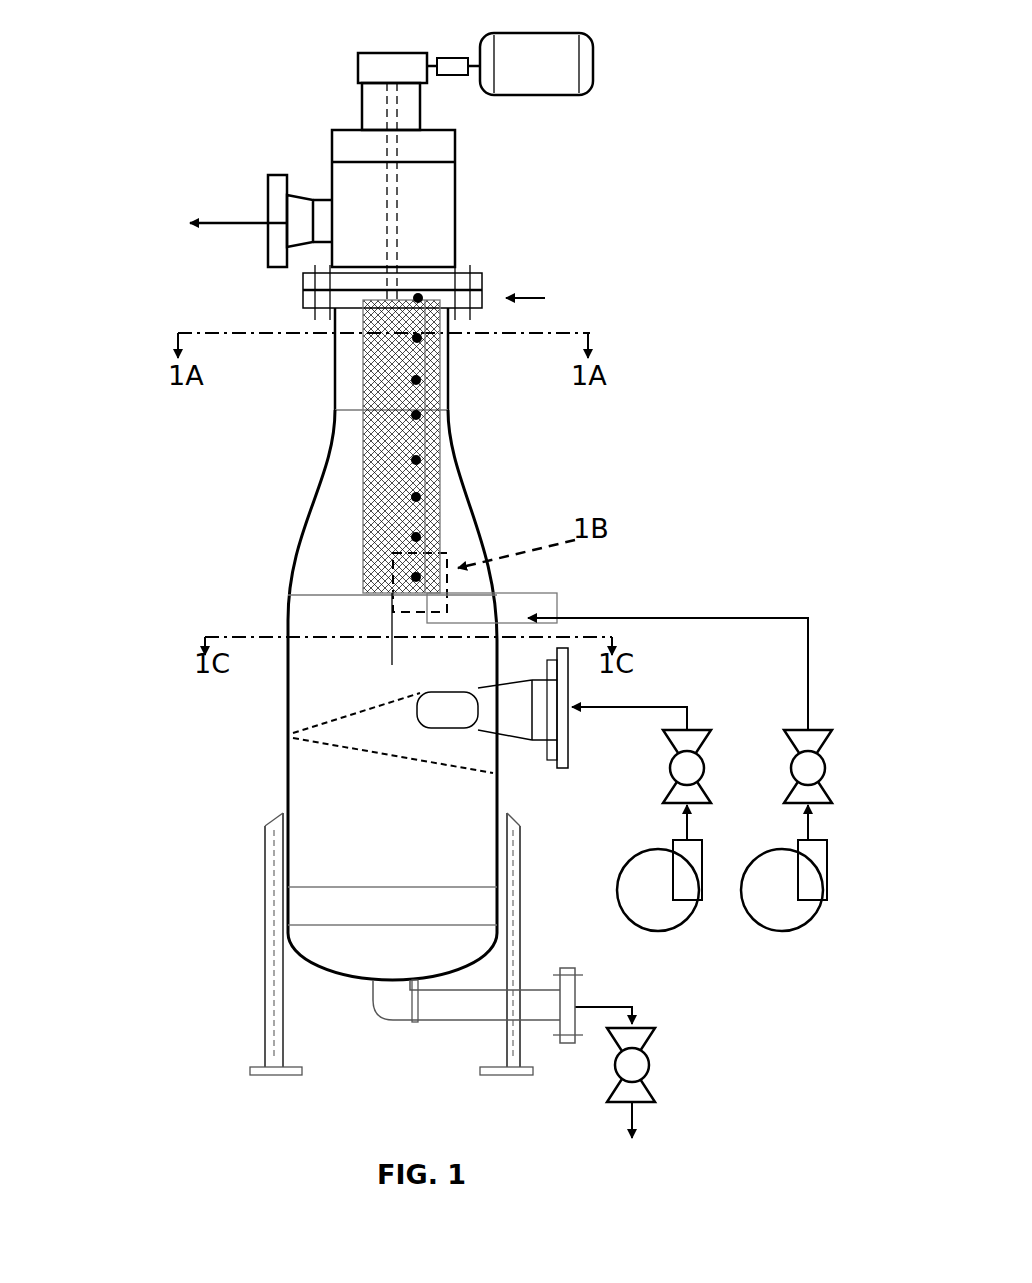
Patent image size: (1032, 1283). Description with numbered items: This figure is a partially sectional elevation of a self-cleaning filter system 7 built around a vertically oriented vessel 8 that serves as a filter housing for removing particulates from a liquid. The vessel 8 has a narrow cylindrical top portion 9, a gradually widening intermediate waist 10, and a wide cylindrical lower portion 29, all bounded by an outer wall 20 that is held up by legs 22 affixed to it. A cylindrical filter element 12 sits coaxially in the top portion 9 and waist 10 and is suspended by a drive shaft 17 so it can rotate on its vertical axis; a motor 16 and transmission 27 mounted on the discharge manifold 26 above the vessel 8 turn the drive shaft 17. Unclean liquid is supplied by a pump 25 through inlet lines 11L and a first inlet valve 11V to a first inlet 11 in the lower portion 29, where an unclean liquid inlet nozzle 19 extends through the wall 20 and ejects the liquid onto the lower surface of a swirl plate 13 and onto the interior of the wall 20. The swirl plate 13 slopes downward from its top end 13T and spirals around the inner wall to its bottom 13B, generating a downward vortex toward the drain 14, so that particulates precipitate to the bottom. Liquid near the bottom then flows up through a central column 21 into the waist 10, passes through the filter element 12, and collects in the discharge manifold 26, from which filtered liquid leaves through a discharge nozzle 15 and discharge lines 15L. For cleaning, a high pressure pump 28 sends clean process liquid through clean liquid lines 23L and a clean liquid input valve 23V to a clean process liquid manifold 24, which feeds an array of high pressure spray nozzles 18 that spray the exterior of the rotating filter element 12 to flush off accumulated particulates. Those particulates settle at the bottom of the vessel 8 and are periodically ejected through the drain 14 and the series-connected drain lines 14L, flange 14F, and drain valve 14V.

The filter system 7 is at (148, 951).
The vessel 8 is at (203, 592).
The cylindrical top portion 9 is at (310, 350).
The intermediate waist 10 is at (303, 460).
The first inlet 11 is at (568, 690).
The inlet lines 11L is at (670, 705).
The first inlet valve 11V is at (670, 768).
The filter element 12 is at (363, 384).
The swirl plate 13 is at (305, 705).
The top end of swirl plate 13T is at (423, 690).
The bottom of swirl plate 13B is at (473, 778).
The drain 14 is at (393, 972).
The drain lines 14L is at (468, 1020).
The flange 14F is at (570, 966).
The drain valve 14V is at (615, 1080).
The discharge nozzle 15 is at (277, 175).
The discharge lines 15L is at (227, 223).
The motor 16 is at (594, 66).
The drive shaft 17 is at (390, 110).
The high pressure spray nozzles 18 is at (424, 303).
The unclean liquid inlet nozzle 19 is at (470, 722).
The outer wall 20 is at (293, 577).
The central column 21 is at (402, 694).
The legs 22 is at (288, 887).
The clean liquid lines 23L is at (510, 615).
The clean liquid input valve 23V is at (826, 768).
The clean process liquid manifold 24 is at (440, 450).
The pump 25 is at (690, 920).
The discharge manifold 26 is at (456, 210).
The transmission 27 is at (445, 43).
The high pressure pump 28 is at (800, 922).
The lower portion 29 is at (263, 693).